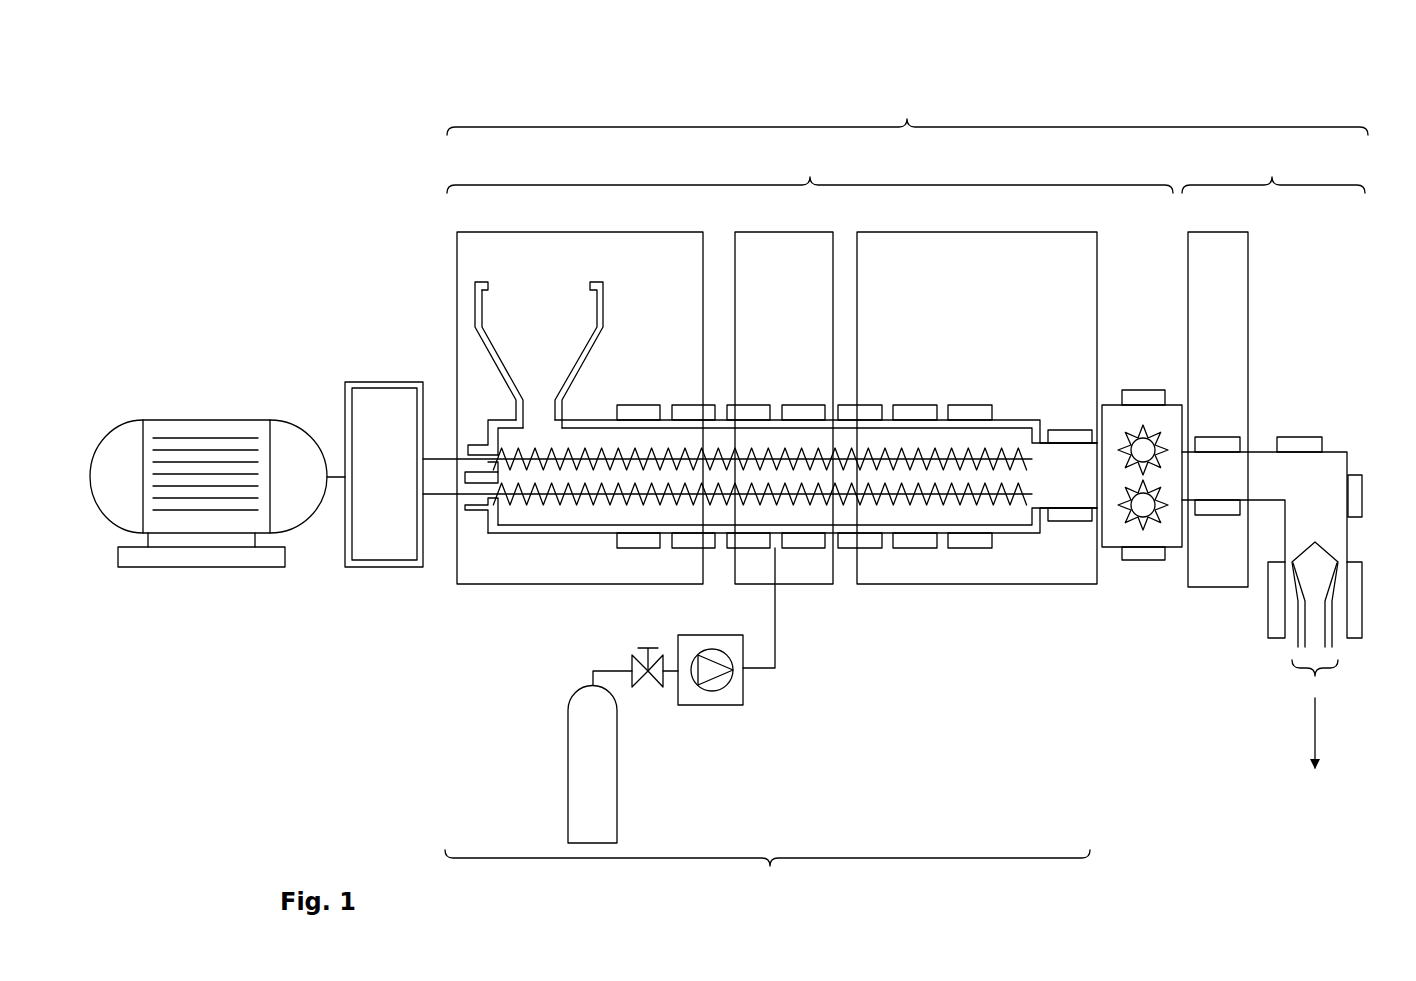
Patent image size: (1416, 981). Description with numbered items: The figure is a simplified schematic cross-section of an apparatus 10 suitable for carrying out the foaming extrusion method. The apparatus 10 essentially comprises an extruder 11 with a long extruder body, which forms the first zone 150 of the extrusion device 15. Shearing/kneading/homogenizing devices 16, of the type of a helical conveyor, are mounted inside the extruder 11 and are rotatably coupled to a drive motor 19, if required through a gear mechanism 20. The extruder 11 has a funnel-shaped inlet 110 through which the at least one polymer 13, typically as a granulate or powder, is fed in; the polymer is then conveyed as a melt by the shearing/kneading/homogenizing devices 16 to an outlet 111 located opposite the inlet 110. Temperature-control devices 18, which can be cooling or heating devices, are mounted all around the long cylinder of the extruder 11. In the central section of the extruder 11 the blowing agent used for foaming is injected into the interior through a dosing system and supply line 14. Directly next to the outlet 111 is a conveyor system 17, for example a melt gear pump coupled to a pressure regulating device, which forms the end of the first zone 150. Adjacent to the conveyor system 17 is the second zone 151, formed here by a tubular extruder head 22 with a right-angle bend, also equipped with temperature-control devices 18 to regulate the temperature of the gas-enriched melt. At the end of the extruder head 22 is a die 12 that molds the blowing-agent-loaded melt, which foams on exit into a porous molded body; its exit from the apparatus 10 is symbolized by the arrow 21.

The apparatus 10 is at (995, 90).
The extruder 11 is at (771, 658).
The die 12 is at (1330, 548).
The polymer 13 is at (537, 326).
The dosing system and supply line 14 is at (775, 643).
The extrusion device 15 is at (907, 109).
The first zone 150 is at (810, 364).
The second zone 151 is at (1273, 365).
The shearing/kneading/homogenizing devices 16 is at (550, 500).
The conveyor system 17 is at (1143, 530).
The temperature-control devices 18 is at (640, 404).
The drive motor 19 is at (197, 567).
The gear mechanism 20 is at (380, 567).
The arrow 21 is at (1315, 728).
The extruder head 22 is at (1340, 460).
The inlet 110 is at (500, 372).
The outlet 111 is at (1097, 470).